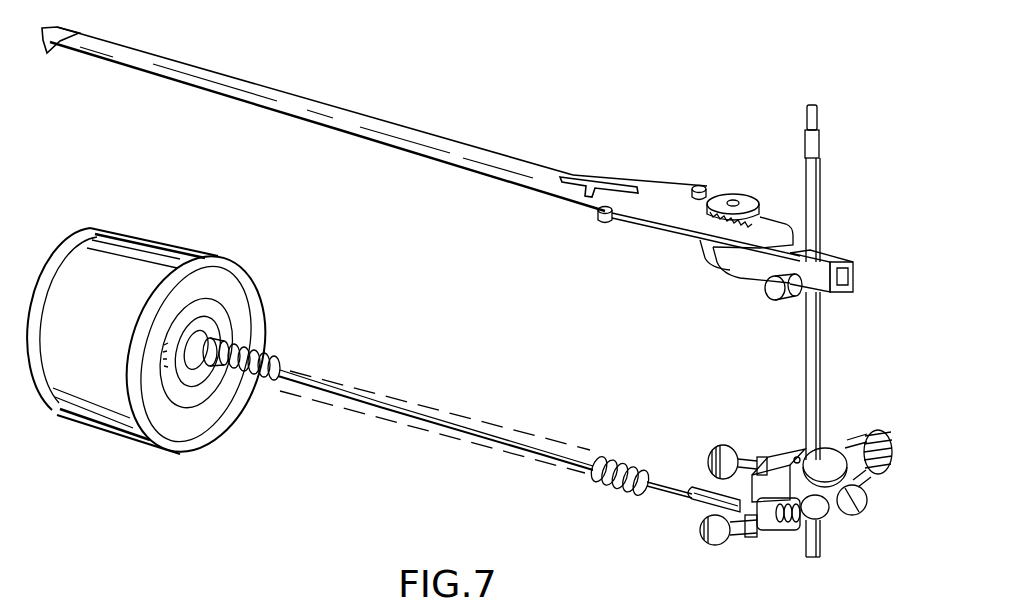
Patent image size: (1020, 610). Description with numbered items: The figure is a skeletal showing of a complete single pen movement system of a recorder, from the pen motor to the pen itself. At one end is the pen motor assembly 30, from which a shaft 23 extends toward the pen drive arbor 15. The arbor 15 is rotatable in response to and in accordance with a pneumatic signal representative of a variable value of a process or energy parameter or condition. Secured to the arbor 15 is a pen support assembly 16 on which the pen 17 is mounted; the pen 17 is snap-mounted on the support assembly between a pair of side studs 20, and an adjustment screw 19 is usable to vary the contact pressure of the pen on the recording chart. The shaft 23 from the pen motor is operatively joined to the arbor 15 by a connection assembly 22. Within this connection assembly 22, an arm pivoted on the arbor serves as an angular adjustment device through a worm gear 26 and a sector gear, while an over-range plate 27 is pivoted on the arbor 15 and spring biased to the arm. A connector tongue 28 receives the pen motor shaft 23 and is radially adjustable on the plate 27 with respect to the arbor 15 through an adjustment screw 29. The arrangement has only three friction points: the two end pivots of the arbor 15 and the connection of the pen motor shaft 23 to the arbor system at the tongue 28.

The pen drive arbor 15 is at (806, 357).
The pen support assembly 16 is at (740, 186).
The pen 17 is at (351, 112).
The adjustment screw 19 is at (688, 240).
The side studs 20 is at (697, 185).
The connection assembly 22 is at (833, 424).
The shaft 23 is at (534, 447).
The worm gear 26 is at (789, 455).
The over-range plate 27 is at (878, 497).
The connector tongue 28 is at (772, 532).
The adjustment screw 29 is at (720, 542).
The pen motor assembly 30 is at (133, 214).